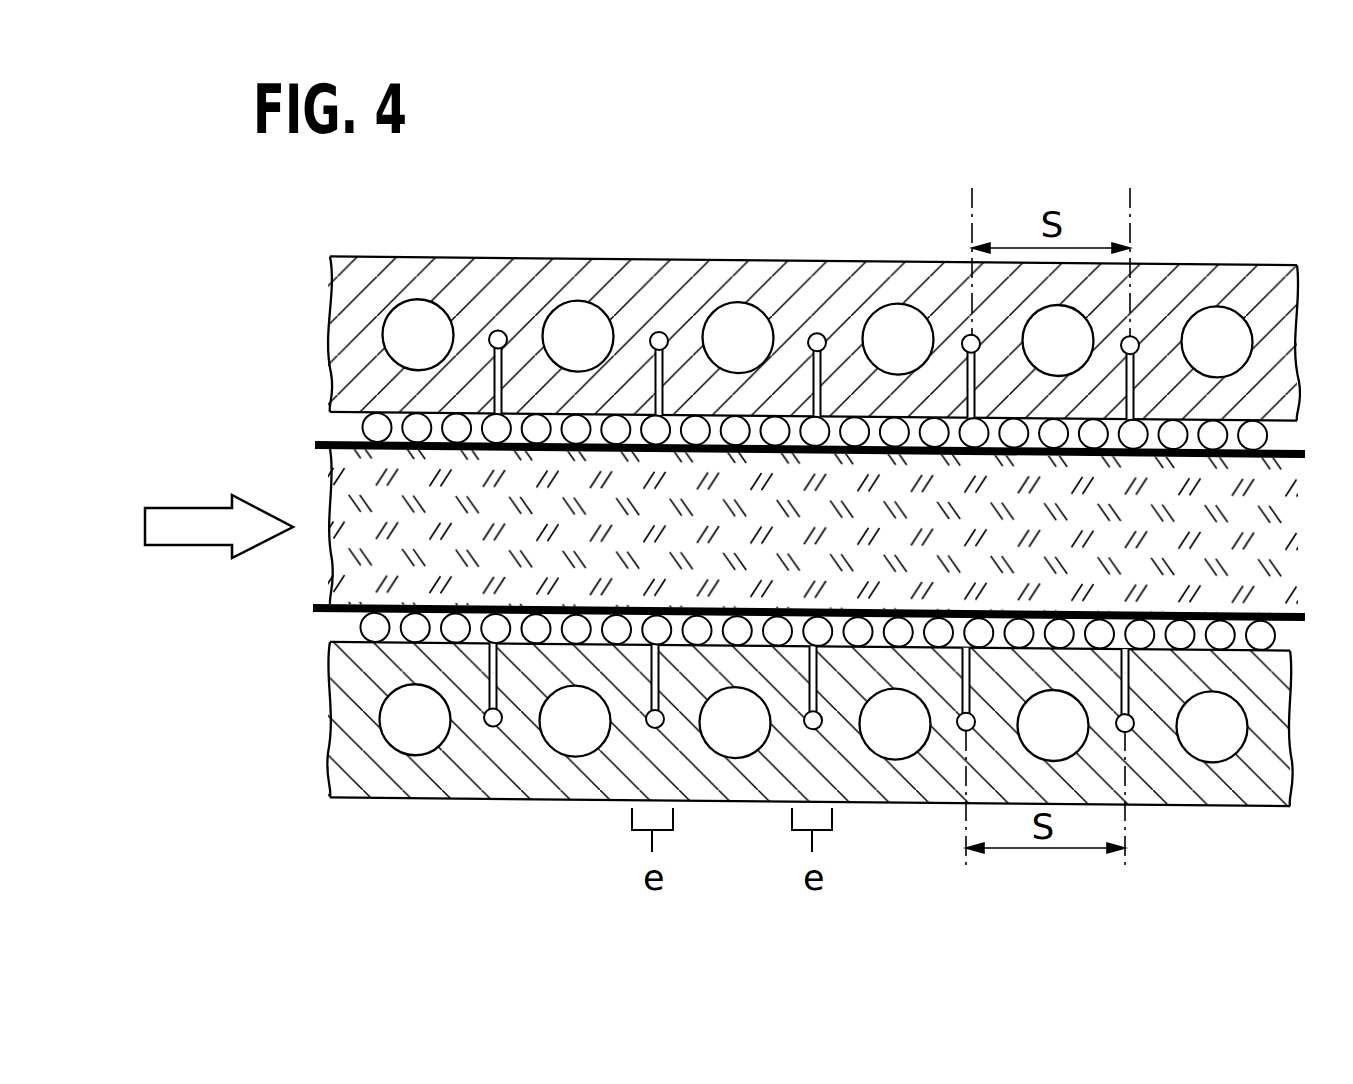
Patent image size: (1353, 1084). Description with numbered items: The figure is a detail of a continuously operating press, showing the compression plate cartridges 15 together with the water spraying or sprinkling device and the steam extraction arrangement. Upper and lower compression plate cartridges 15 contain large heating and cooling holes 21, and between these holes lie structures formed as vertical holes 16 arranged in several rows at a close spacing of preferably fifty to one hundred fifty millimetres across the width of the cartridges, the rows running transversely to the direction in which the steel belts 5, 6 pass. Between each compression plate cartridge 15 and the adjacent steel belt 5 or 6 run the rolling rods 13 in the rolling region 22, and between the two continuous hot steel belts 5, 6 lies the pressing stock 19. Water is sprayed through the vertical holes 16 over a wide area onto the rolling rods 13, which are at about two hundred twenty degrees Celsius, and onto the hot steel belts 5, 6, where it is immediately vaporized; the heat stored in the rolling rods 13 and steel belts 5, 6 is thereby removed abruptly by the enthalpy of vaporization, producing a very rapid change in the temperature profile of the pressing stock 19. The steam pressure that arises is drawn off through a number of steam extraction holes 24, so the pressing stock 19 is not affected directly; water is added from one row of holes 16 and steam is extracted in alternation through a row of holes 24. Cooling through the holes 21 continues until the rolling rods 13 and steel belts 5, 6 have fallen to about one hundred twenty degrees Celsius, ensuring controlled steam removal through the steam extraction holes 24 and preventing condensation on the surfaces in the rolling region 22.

The steel belt 5 is at (315, 613).
The steel belt 6 is at (315, 444).
The rolling rod 13 is at (527, 427).
The compression plate cartridge 15 is at (843, 302).
The vertical hole 16 is at (670, 338).
The pressing stock 19 is at (1022, 507).
The heating and cooling hole 21 is at (738, 338).
The rolling region 22 is at (1293, 440).
The steam extraction hole 24 is at (510, 358).